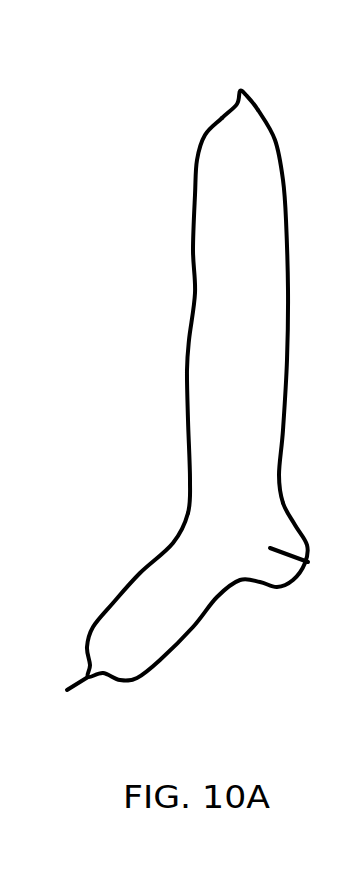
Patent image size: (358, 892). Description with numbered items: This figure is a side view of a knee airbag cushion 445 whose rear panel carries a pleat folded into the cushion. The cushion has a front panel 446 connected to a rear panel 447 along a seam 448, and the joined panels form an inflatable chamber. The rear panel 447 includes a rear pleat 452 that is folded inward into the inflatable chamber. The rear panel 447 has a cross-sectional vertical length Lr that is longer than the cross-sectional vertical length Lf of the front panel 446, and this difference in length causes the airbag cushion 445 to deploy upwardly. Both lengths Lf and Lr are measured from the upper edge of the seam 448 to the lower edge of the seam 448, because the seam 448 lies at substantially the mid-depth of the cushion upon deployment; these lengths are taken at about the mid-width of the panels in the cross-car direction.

The knee airbag cushion 445 is at (162, 139).
The front panel 446 is at (195, 293).
The rear panel 447 is at (203, 623).
The seam 448 is at (236, 97).
The rear pleat 452 is at (313, 575).
The cross-sectional vertical length of the front panel Lf is at (190, 497).
The cross-sectional vertical length of the rear panel Lr is at (303, 532).